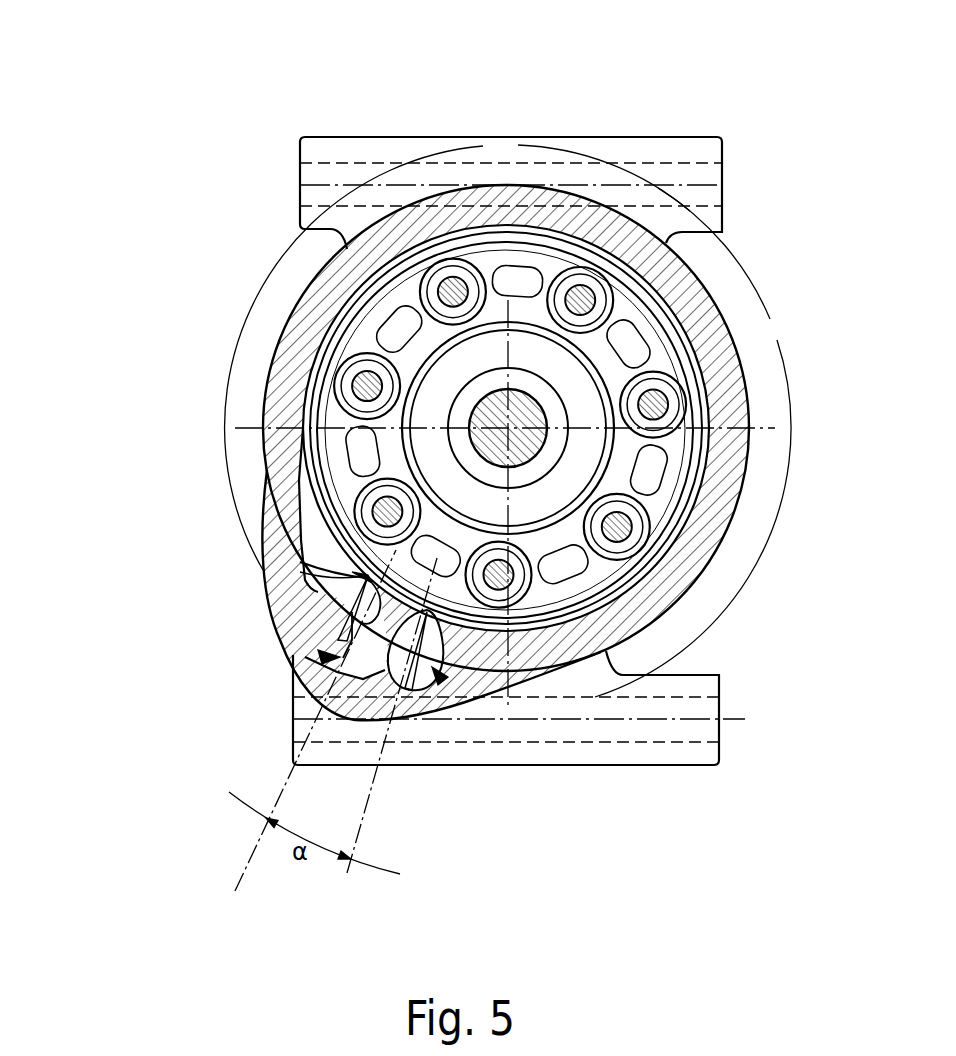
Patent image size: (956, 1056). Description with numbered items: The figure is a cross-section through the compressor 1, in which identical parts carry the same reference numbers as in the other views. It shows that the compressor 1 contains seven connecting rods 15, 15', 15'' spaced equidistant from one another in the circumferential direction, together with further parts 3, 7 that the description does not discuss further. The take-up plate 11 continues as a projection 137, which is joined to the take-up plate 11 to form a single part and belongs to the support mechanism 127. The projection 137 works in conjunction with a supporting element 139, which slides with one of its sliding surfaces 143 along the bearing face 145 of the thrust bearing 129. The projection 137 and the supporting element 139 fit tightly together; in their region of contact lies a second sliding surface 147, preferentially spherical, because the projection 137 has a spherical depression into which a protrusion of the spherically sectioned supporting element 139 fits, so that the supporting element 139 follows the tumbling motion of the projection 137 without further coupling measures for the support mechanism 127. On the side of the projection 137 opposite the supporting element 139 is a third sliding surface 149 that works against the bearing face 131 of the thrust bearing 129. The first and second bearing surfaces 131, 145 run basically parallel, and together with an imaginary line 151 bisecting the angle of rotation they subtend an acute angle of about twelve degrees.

The compressor 1 is at (226, 341).
The pump housing 3 is at (718, 344).
The drive shaft 7 is at (512, 420).
The take-up plate 11 is at (573, 587).
The connecting rod 15 is at (453, 174).
The connecting rod 15' is at (533, 693).
The connecting rod 15'' is at (717, 581).
The support mechanism 127 is at (318, 657).
The thrust bearing 129 is at (470, 480).
The first bearing surface 131 is at (348, 644).
The projection 137 is at (350, 658).
The supporting element 139 is at (418, 650).
The sliding surface 143 is at (375, 660).
The second bearing surface 145 is at (445, 690).
The second sliding surface 147 is at (345, 690).
The third sliding surface 149 is at (360, 597).
The imaginary line 151 is at (246, 875).